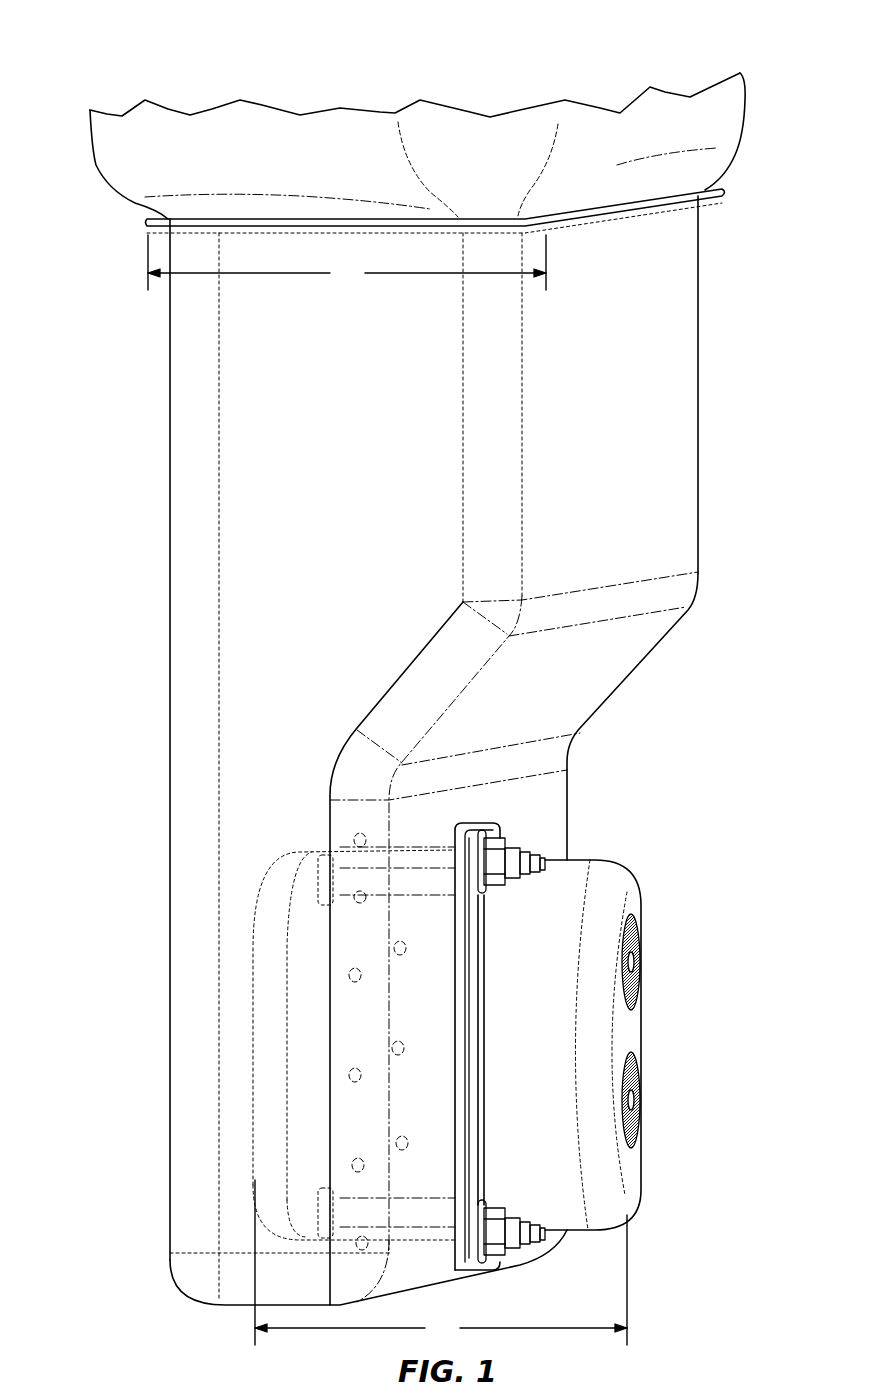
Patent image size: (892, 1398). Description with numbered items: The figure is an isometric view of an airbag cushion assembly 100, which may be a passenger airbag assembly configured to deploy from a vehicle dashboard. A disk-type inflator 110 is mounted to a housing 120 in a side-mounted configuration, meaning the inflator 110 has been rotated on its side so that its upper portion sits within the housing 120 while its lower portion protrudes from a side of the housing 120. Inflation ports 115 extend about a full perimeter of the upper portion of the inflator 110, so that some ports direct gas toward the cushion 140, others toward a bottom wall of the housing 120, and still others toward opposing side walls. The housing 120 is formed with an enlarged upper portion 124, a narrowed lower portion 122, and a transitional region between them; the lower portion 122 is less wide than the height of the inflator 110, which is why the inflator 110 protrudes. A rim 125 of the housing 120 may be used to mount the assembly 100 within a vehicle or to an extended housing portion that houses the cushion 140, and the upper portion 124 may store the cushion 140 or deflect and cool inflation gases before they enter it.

The airbag cushion assembly 100 is at (718, 52).
The airbag cushion 140 is at (202, 122).
The rim 125 is at (705, 185).
The enlarged upper portion 124 is at (700, 322).
The housing 120 is at (668, 656).
The narrowed lower portion 122 is at (232, 1135).
The inflation ports 115 is at (385, 949).
The inflator 110 is at (632, 1035).